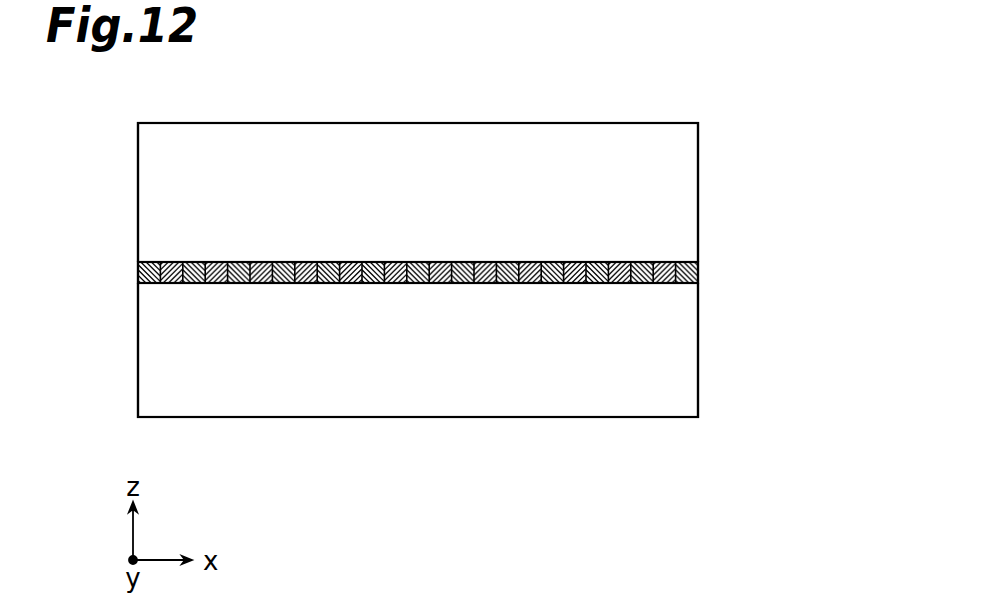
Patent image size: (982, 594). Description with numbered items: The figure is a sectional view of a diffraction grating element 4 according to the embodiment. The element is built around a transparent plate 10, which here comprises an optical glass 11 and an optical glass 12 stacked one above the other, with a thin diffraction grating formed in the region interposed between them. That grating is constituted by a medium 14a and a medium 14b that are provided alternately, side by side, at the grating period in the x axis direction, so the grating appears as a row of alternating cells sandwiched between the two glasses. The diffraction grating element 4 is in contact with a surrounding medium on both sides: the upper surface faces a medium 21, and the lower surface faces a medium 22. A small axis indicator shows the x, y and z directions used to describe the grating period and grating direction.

The diffraction grating element 4 is at (858, 52).
The transparent plate 10 is at (800, 137).
The optical glass 11 is at (693, 371).
The optical glass 12 is at (693, 178).
The medium 14a is at (663, 262).
The medium 14b is at (698, 268).
The medium 21 is at (693, 71).
The medium 22 is at (693, 474).